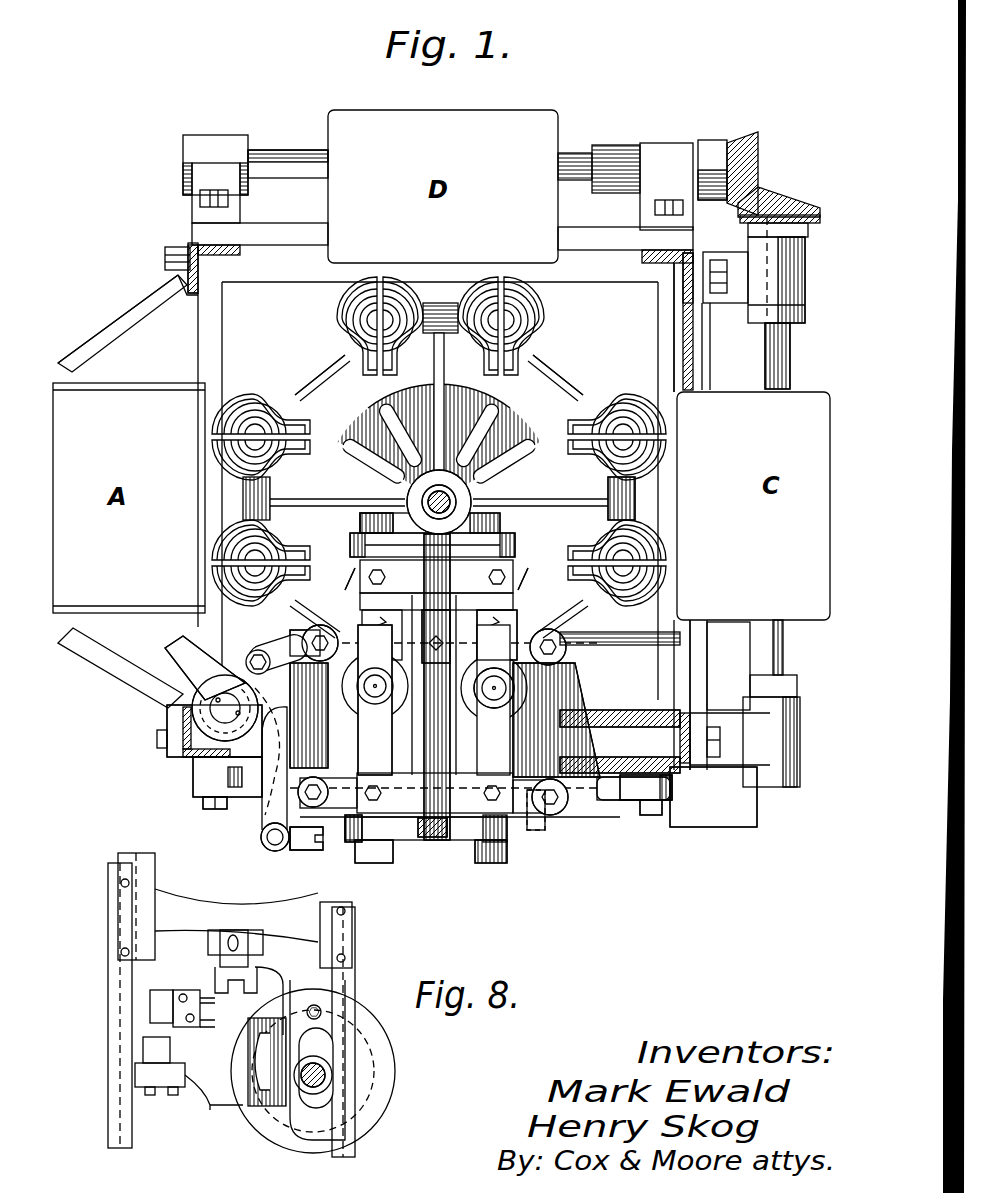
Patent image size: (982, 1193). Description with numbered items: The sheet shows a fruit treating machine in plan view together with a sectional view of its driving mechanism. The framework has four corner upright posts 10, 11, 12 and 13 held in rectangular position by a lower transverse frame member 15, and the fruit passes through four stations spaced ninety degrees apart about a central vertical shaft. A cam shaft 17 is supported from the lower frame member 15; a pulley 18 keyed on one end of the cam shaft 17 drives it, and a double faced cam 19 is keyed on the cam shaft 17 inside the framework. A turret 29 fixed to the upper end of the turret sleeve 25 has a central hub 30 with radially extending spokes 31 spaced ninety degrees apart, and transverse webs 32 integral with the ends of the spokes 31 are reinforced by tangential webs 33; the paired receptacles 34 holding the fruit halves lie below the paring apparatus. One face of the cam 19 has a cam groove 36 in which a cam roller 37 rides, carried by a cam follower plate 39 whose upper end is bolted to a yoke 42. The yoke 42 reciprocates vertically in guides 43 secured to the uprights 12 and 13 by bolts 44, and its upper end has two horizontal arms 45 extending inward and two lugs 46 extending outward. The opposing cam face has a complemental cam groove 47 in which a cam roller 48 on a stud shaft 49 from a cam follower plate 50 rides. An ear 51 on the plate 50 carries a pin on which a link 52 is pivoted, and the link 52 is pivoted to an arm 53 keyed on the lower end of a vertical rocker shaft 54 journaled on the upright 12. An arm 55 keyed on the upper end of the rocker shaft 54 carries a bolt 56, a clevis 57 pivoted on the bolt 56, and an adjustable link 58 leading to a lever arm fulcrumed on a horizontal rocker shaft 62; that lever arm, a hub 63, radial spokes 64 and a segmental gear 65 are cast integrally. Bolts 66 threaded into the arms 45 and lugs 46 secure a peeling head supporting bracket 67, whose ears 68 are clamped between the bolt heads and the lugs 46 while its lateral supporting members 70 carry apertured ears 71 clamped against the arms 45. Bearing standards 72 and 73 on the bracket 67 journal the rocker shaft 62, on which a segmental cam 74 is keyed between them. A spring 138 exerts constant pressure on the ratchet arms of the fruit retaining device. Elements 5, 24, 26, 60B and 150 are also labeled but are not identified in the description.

In FIG. 1, the section line 5 is at (505, 455).
In FIG. 1, the corner upright post 10 is at (190, 248).
In FIG. 1, the corner upright post 11 is at (660, 268).
In FIG. 1, the corner upright post 12 is at (180, 722).
In FIG. 8, the corner upright post 12 is at (108, 1100).
In FIG. 1, the corner upright post 13 is at (688, 765).
In FIG. 1, the lower transverse frame member 15 is at (200, 350).
In FIG. 1, the cam shaft 17 is at (675, 610).
In FIG. 8, the cam shaft 17 is at (332, 1077).
In FIG. 1, the pulley 18 is at (737, 815).
In FIG. 1, the double faced cam 19 is at (748, 625).
In FIG. 8, the double faced cam 19 is at (388, 1058).
In FIG. 1, the segment plate 24 is at (462, 432).
In FIG. 1, the turret sleeve 25 is at (472, 498).
In FIG. 1, the shaft 26 is at (437, 495).
In FIG. 1, the turret 29 is at (318, 362).
In FIG. 1, the central hub 30 is at (406, 500).
In FIG. 1, the spokes 31 is at (434, 399).
In FIG. 1, the transverse webs 32 is at (628, 508).
In FIG. 1, the tangential webs 33 is at (560, 365).
In FIG. 1, the receptacles 34 is at (642, 428).
In FIG. 8, the cam groove 36 is at (262, 1092).
In FIG. 8, the cam roller 37 is at (320, 1010).
In FIG. 1, the cam follower plate 39 is at (658, 710).
In FIG. 8, the cam follower plate 39 is at (305, 958).
In FIG. 1, the yoke 42 is at (625, 800).
In FIG. 1, the vertical guides 43 is at (207, 775).
In FIG. 1, the bolts 44 is at (208, 806).
In FIG. 1, the horizontal arms 45 is at (575, 700).
In FIG. 1, the lugs 46 is at (275, 803).
In FIG. 8, the cam groove 47 is at (340, 1020).
In FIG. 1, the cam roller 48 is at (493, 690).
In FIG. 8, the cam roller 48 is at (250, 1095).
In FIG. 1, the stud shaft 49 is at (490, 620).
In FIG. 1, the cam follower plate 50 is at (290, 633).
In FIG. 8, the cam follower plate 50 is at (208, 1078).
In FIG. 1, the ear 51 is at (290, 650).
In FIG. 1, the link 52 is at (290, 670).
In FIG. 8, the link 52 is at (160, 1088).
In FIG. 1, the arm 53 is at (232, 655).
In FIG. 8, the arm 53 is at (140, 1050).
In FIG. 1, the vertical rocker shaft 54 is at (222, 715).
In FIG. 8, the vertical rocker shaft 54 is at (118, 850).
In FIG. 1, the arm 55 is at (265, 812).
In FIG. 1, the bolt 56 is at (272, 845).
In FIG. 1, the clevis 57 is at (293, 850).
In FIG. 1, the adjustable link 58 is at (316, 850).
In FIG. 1, the block 60B is at (432, 838).
In FIG. 1, the horizontal rocker shaft 62 is at (440, 735).
In FIG. 1, the hub 63 is at (448, 838).
In FIG. 1, the radial spokes 64 is at (382, 840).
In FIG. 1, the segmental gear 65 is at (495, 842).
In FIG. 1, the bolts 66 is at (320, 625).
In FIG. 1, the peeling head supporting bracket 67 is at (356, 523).
In FIG. 1, the ears 68 is at (560, 793).
In FIG. 1, the lateral supporting members 70 is at (357, 740).
In FIG. 1, the apertured ears 71 is at (335, 620).
In FIG. 1, the bearing standard 72 is at (355, 822).
In FIG. 1, the bearing standard 73 is at (512, 568).
In FIG. 1, the segmental cam 74 is at (420, 610).
In FIG. 1, the spring 138 is at (374, 638).
In FIG. 1, the frame member 150 is at (688, 622).